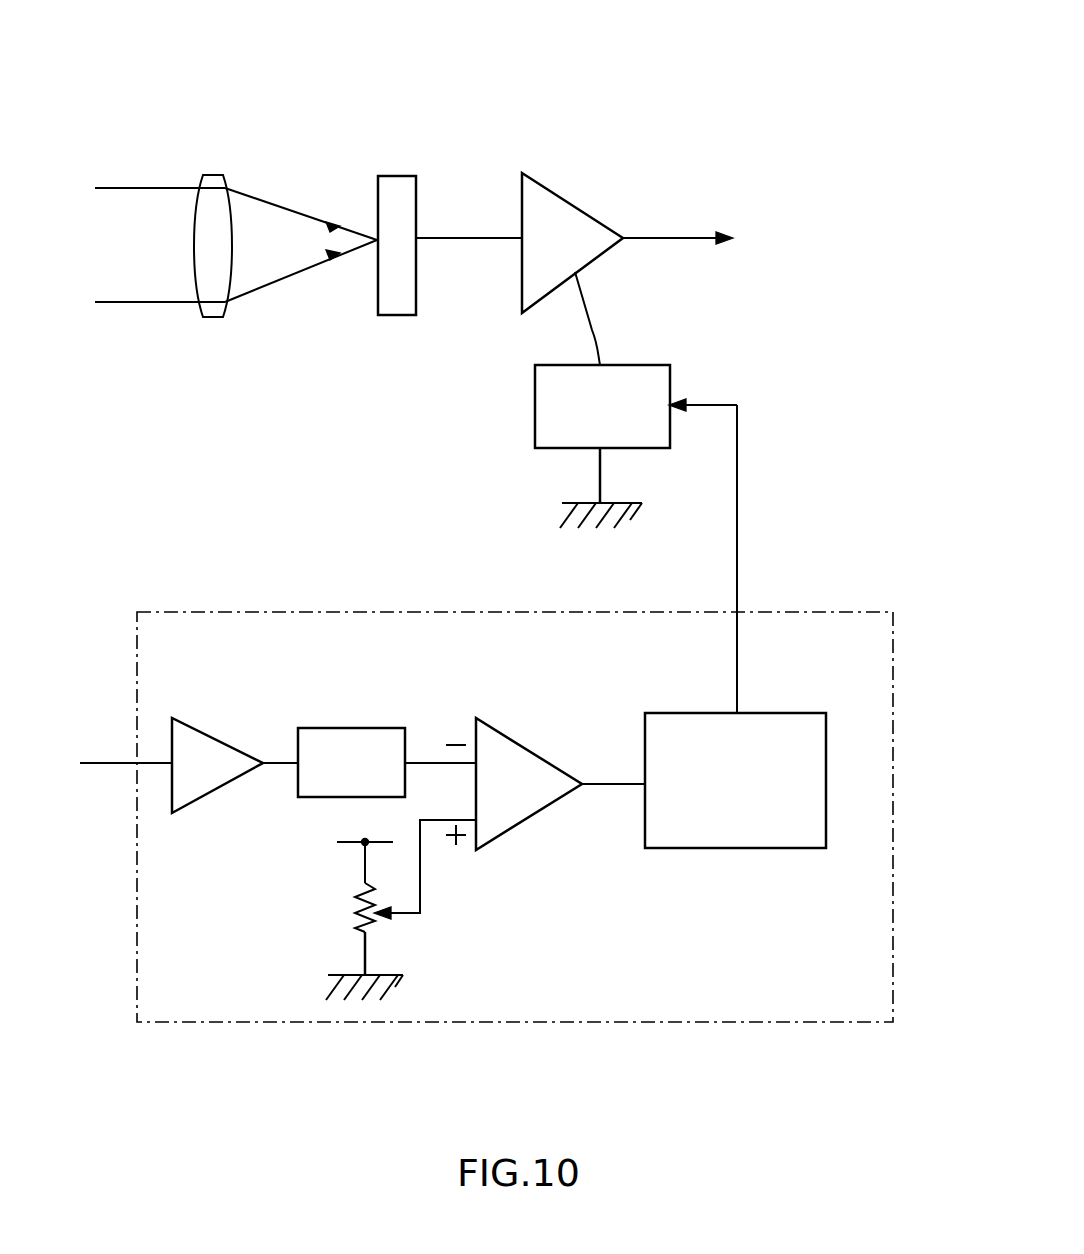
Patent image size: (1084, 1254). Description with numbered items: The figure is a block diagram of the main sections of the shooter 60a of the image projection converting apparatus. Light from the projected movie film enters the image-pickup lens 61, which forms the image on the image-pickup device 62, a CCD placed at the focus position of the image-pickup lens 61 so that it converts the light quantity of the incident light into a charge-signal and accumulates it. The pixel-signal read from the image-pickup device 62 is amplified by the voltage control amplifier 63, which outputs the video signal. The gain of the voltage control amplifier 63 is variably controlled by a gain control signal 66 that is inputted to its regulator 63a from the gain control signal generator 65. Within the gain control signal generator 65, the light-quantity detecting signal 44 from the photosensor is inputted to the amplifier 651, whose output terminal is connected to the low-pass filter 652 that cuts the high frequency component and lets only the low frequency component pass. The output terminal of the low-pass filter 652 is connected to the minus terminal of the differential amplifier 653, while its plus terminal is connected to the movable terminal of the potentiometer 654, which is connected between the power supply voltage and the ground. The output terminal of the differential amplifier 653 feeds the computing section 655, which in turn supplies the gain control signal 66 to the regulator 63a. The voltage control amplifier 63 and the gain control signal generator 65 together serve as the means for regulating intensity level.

The shooter 60a is at (725, 88).
The image-pickup lens 61 is at (213, 175).
The image-pickup device 62 is at (397, 176).
The voltage control amplifier 63 is at (580, 205).
The regulator 63a is at (535, 400).
The gain control signal 66 is at (740, 486).
The gain control signal generator 65 is at (397, 1025).
The light-quantity detecting signal 44 is at (105, 763).
The amplifier 651 is at (232, 745).
The low-pass filter 652 is at (348, 728).
The differential amplifier 653 is at (512, 735).
The potentiometer 654 is at (357, 924).
The computing section 655 is at (795, 713).